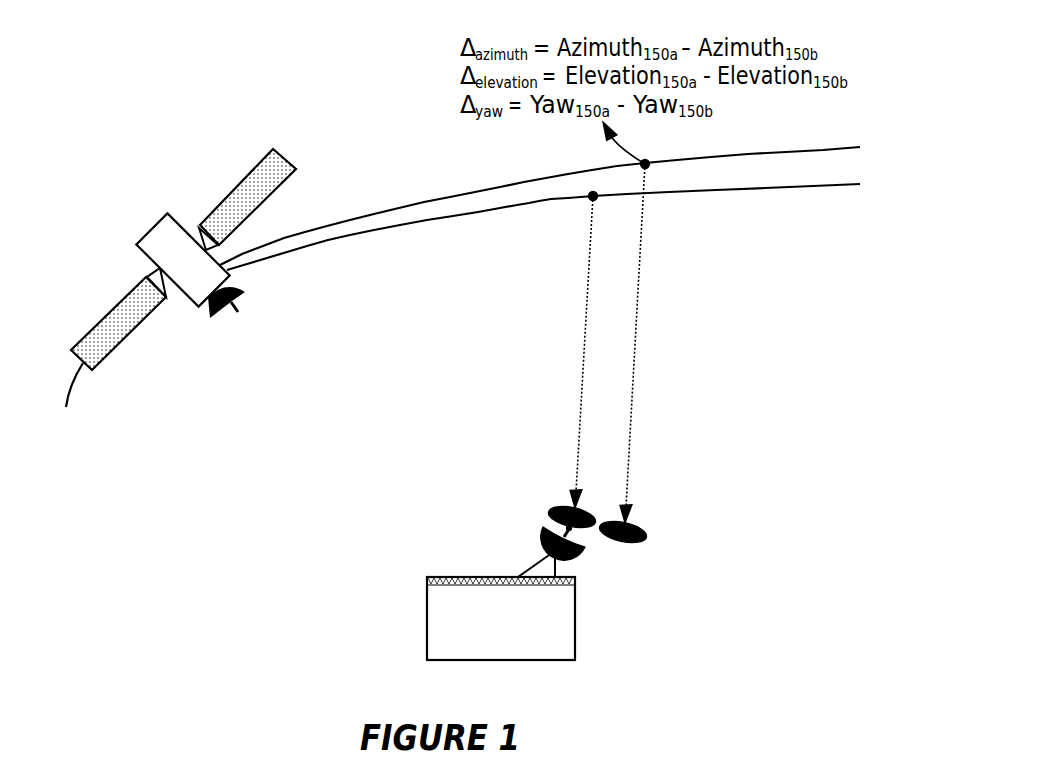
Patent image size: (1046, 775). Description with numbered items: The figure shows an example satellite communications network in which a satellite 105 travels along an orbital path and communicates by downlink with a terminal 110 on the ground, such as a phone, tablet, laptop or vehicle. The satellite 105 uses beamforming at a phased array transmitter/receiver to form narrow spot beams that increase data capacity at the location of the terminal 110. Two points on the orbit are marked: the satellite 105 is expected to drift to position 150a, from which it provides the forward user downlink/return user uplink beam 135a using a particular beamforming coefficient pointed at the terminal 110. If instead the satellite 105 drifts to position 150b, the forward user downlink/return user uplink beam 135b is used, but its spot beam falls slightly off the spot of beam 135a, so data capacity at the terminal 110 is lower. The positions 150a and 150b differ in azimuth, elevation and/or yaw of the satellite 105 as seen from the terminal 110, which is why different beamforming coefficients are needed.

The satellite 105 is at (160, 222).
The terminal 110 is at (520, 644).
The forward user downlink/return user uplink beam 135a is at (572, 363).
The forward user downlink/return user uplink beam 135b is at (637, 355).
The position 150a is at (593, 196).
The position 150b is at (645, 164).